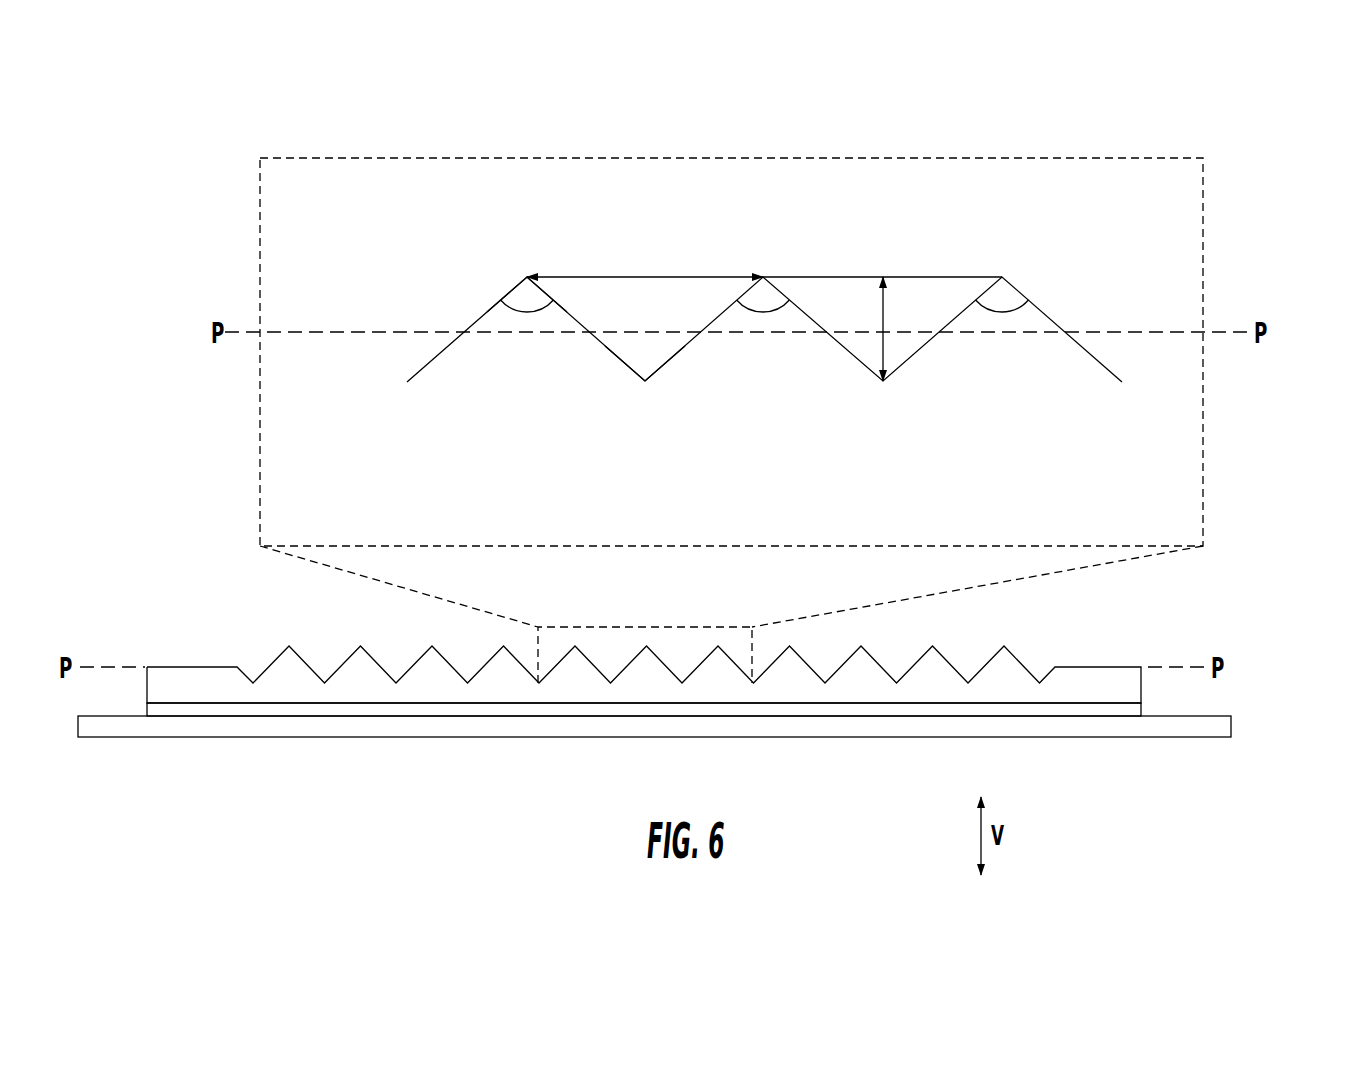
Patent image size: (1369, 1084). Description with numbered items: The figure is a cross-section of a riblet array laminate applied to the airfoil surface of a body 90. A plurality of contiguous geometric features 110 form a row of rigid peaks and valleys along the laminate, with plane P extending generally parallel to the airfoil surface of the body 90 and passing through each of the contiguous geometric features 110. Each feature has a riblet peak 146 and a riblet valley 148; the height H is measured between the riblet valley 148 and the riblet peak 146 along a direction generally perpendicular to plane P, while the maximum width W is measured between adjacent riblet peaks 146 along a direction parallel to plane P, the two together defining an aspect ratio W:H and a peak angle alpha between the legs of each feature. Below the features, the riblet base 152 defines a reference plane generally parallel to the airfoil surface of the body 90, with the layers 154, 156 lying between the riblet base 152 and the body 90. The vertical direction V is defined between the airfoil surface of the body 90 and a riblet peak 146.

The contiguous geometric features 110 is at (1005, 205).
The riblet peak 146 is at (507, 273).
The riblet valley 148 is at (645, 381).
The riblet base 152 is at (1145, 691).
The intermediate layer 154 is at (758, 674).
The adhesive layer 156 is at (1145, 708).
The body 90 is at (1225, 725).